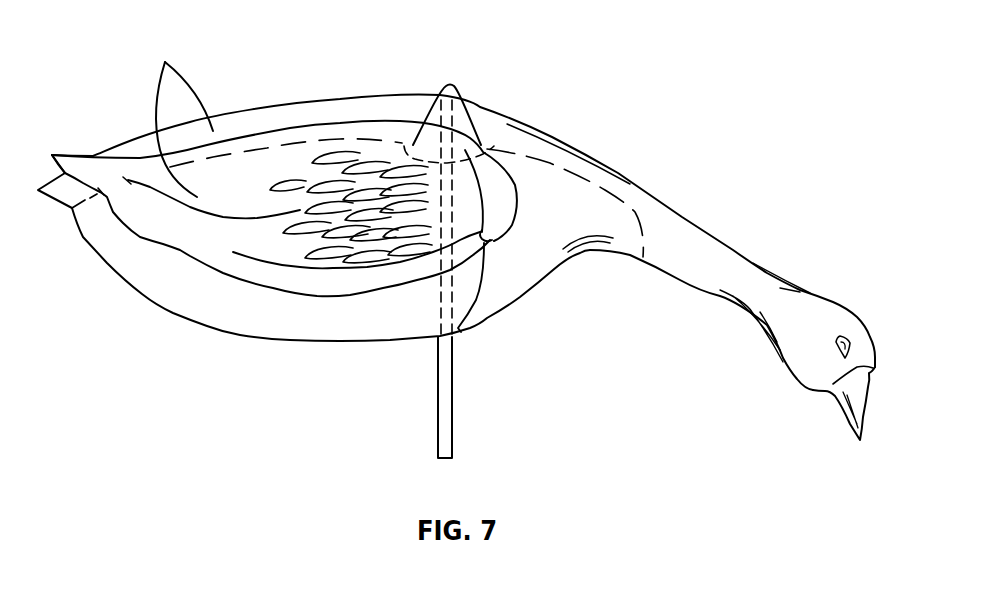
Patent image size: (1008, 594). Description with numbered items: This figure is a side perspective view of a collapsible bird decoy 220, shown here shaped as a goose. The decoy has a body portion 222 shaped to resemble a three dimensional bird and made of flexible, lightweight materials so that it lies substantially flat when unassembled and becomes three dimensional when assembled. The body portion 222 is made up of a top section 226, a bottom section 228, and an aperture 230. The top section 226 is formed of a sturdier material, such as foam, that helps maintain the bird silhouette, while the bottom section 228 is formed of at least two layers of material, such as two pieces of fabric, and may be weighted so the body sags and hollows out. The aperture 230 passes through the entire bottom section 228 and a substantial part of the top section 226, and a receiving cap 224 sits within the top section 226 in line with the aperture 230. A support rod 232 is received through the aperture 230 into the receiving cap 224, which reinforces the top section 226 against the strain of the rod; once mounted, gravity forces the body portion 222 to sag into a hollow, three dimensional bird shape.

The collapsible bird decoy 220 is at (631, 124).
The body portion 222 is at (171, 114).
The receiving cap 224 is at (463, 118).
The top section 226 is at (328, 115).
The bottom section 228 is at (213, 293).
The aperture 230 is at (494, 239).
The support rod 232 is at (442, 415).